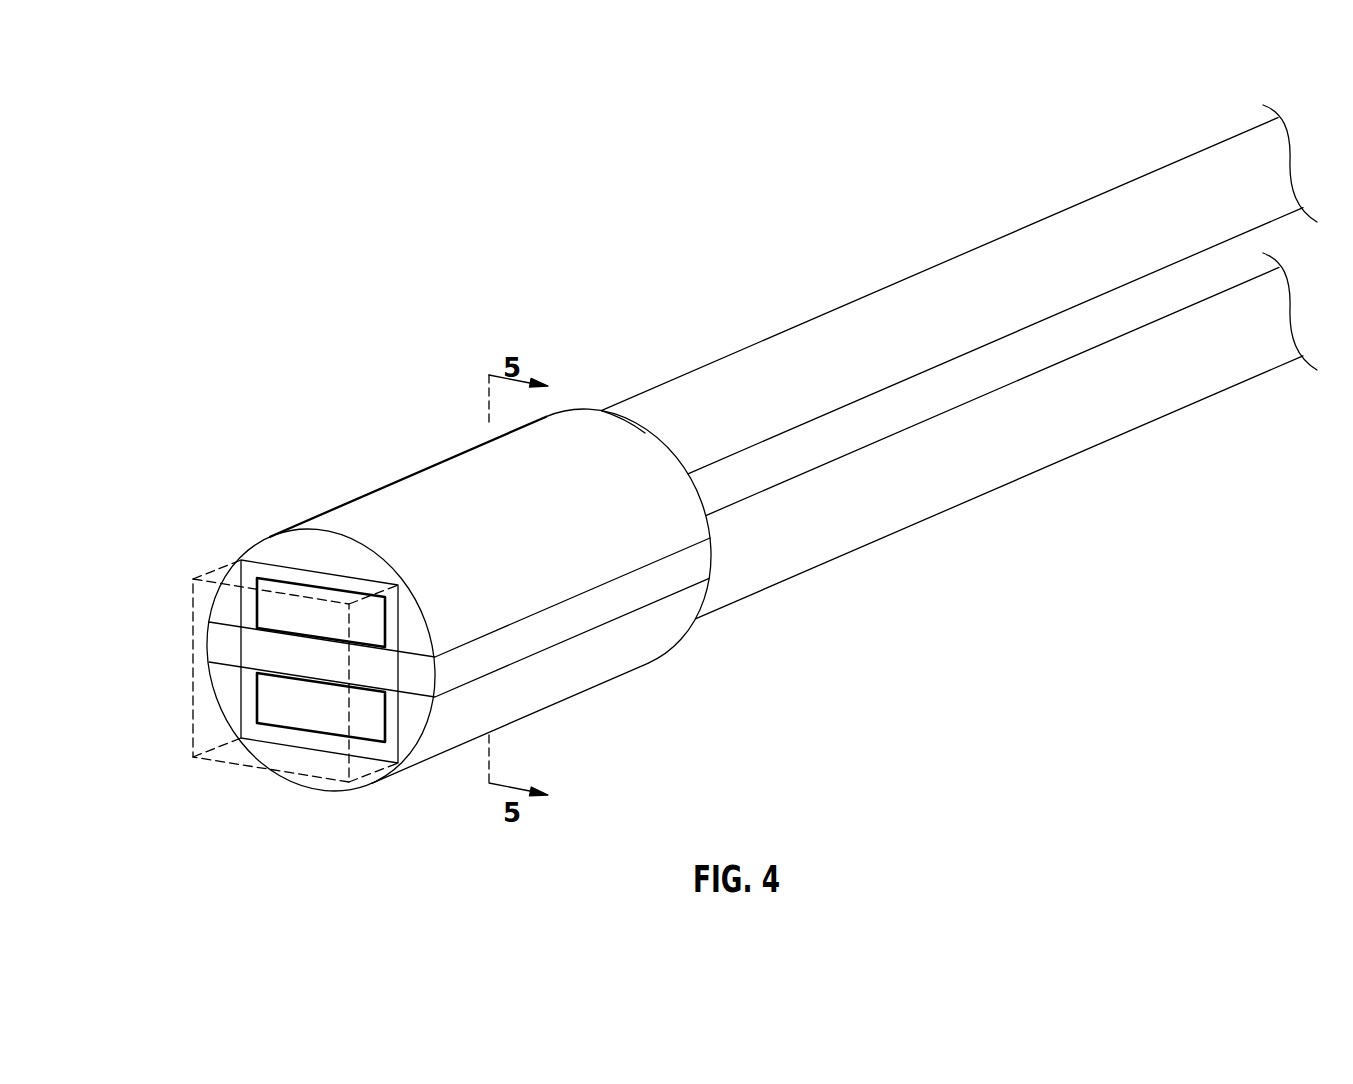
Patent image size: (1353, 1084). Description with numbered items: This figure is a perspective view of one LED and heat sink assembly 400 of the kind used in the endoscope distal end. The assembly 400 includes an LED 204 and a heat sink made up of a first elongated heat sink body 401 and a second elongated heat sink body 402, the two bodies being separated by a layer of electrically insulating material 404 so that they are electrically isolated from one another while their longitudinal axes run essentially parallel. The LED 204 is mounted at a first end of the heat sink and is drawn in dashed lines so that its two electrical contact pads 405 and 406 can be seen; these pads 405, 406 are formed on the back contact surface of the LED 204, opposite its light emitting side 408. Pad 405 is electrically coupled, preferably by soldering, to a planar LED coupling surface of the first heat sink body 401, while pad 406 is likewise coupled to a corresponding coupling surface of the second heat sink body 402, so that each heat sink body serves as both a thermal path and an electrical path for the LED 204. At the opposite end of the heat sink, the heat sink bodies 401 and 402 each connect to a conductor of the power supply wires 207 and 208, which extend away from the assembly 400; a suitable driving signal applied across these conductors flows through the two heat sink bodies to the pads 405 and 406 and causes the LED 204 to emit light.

The LED and heat sink assembly 400 is at (942, 637).
The first elongated heat sink body 401 is at (445, 473).
The second elongated heat sink body 402 is at (533, 692).
The layer of electrically insulating material 404 is at (610, 607).
The electrical contact pad 405 is at (298, 603).
The electrical contact pad 406 is at (300, 700).
The light emitting side 408 is at (223, 755).
The LED 204 is at (168, 667).
The first cable 207 is at (960, 266).
The power supply wire 208 is at (1032, 463).